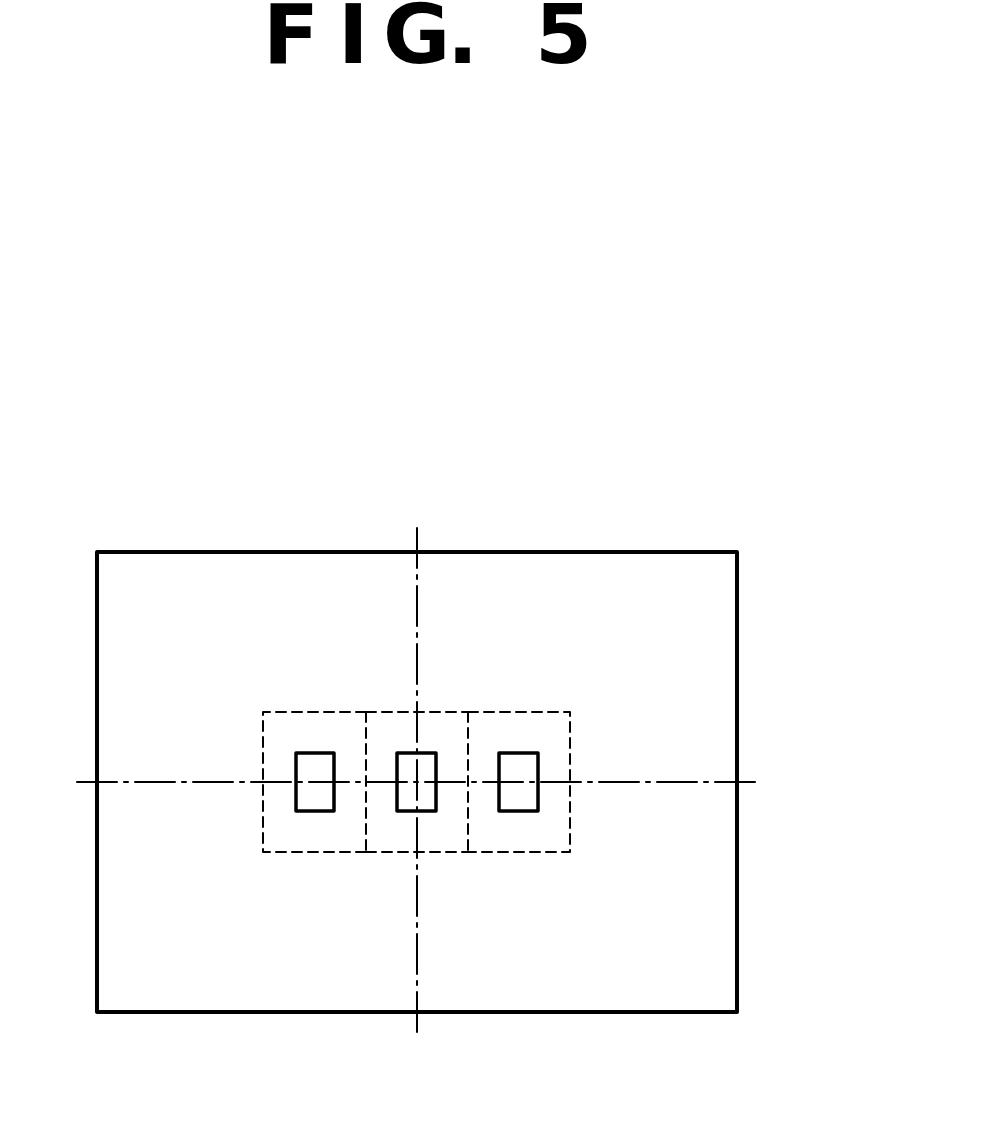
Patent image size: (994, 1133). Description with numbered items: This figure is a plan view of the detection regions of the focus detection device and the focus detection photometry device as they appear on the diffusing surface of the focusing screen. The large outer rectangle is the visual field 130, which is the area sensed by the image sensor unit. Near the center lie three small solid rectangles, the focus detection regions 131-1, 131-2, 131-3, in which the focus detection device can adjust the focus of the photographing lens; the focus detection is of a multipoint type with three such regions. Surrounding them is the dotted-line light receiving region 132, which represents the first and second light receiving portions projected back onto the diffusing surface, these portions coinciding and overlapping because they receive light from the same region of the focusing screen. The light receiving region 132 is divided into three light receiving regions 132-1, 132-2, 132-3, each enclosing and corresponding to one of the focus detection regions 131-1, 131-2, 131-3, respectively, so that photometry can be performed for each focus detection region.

The visual field 130 is at (698, 615).
The light receiving region 132 is at (742, 418).
The light receiving region 132-1 is at (293, 732).
The light receiving region 132-2 is at (448, 728).
The light receiving region 132-3 is at (537, 728).
The focus detection region 131-1 is at (317, 798).
The focus detection region 131-2 is at (408, 798).
The focus detection region 131-3 is at (517, 798).